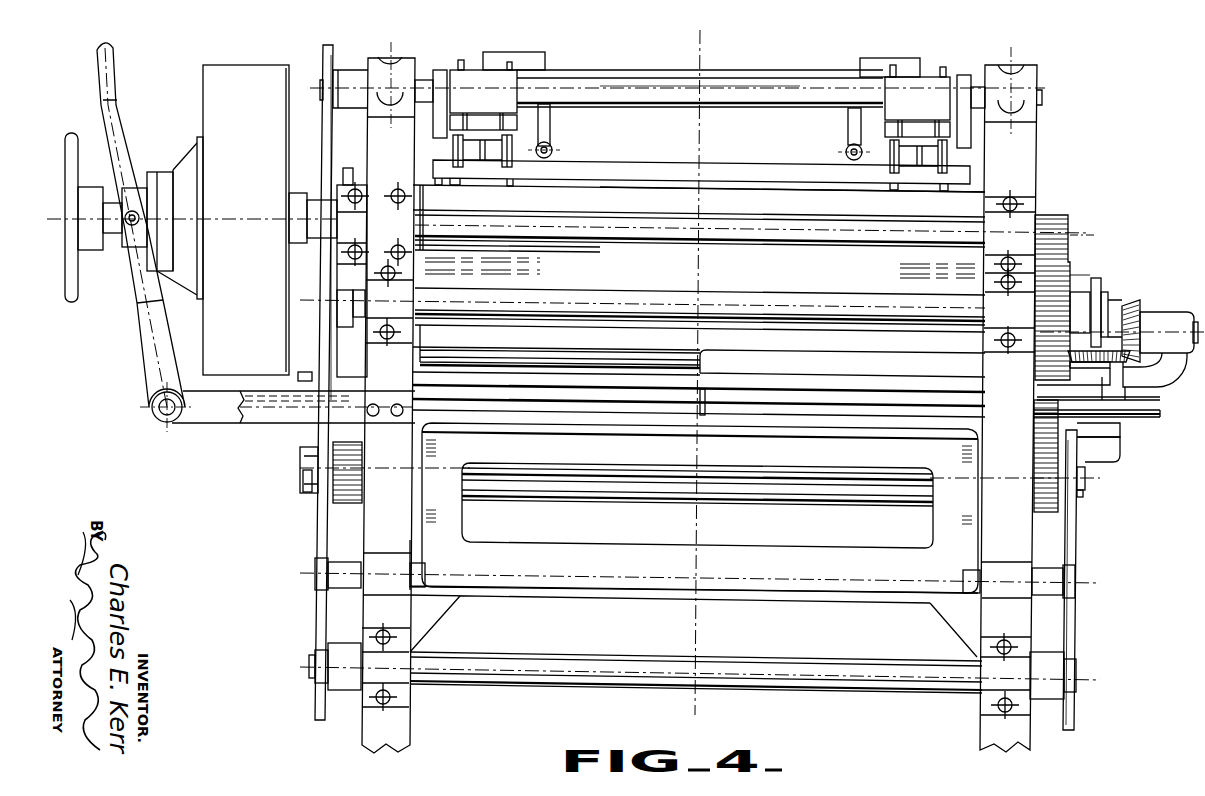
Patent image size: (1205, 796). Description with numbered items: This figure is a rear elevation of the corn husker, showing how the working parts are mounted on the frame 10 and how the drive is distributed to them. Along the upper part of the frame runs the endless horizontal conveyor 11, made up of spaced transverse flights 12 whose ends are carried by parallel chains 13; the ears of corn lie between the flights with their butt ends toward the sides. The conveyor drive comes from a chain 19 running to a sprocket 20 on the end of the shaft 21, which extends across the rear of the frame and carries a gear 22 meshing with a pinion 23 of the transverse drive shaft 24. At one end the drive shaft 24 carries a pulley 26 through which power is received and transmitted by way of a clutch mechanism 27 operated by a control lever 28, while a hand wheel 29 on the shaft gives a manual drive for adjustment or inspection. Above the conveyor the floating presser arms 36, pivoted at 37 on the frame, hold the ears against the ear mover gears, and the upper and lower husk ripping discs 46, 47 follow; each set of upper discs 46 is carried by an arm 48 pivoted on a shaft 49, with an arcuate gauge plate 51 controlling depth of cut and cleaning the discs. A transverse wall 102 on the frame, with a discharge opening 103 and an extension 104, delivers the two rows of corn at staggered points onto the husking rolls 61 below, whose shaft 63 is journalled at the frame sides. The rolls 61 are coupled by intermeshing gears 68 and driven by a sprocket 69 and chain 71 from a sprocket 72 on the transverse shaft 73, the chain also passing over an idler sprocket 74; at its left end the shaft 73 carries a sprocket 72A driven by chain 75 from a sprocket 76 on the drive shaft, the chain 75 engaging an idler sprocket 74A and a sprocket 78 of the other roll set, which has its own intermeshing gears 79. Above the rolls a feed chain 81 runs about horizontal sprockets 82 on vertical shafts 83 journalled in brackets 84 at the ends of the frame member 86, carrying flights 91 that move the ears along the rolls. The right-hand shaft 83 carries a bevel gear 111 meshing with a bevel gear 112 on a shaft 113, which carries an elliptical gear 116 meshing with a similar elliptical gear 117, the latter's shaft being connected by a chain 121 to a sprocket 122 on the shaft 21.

The frame 10 is at (1037, 152).
The endless horizontal conveyor 11 is at (663, 152).
The flights 12 is at (722, 166).
The chains 13 is at (436, 185).
The chain 19 is at (345, 273).
The sprocket 20 is at (345, 310).
The shaft 21 is at (584, 298).
The gear 22 is at (1070, 258).
The pinion 23 is at (1057, 215).
The drive shaft 24 is at (664, 243).
The pulley 26 is at (250, 72).
The clutch mechanism 27 is at (197, 163).
The control lever 28 is at (117, 93).
The hand wheel 29 is at (68, 140).
The floating presser arms 36 is at (550, 128).
The pivot 37 is at (583, 70).
The upper husk ripping discs 46 is at (461, 62).
The lower husk ripping discs 47 is at (512, 185).
The arm 48 is at (488, 72).
The shaft 49 is at (748, 72).
The arcuate gauge plate 51 is at (450, 146).
The husking rolls 61 is at (596, 498).
The shaft 63 is at (305, 478).
The intermeshing gears 68 is at (1044, 511).
The sprocket 69 is at (1082, 497).
The chain 71 is at (1070, 617).
The sprocket 72 is at (1080, 662).
The sprocket 72A is at (318, 652).
The transverse shaft 73 is at (746, 657).
The idler sprocket 74 is at (1078, 582).
The idler sprocket 74A is at (318, 573).
The chain 75 is at (318, 514).
The sprocket 76 is at (320, 198).
The sprocket 78 is at (312, 459).
The intermeshing gears 79 is at (342, 504).
The chain 81 is at (787, 420).
The sprockets 82 is at (248, 422).
The shafts 83 is at (302, 370).
The brackets 84 is at (1153, 383).
The frame member 86 is at (578, 390).
The flights 91 is at (708, 420).
The transverse wall 102 is at (801, 276).
The discharge opening 103 is at (760, 348).
The extension 104 is at (902, 366).
The bevel gear 111 is at (1103, 358).
The bevel gear 112 is at (1142, 313).
The shaft 113 is at (1130, 306).
The elliptical gear 116 is at (1040, 371).
The elliptical gear 117 is at (1074, 286).
The chain 121 is at (1100, 280).
The sprocket 122 is at (1106, 297).